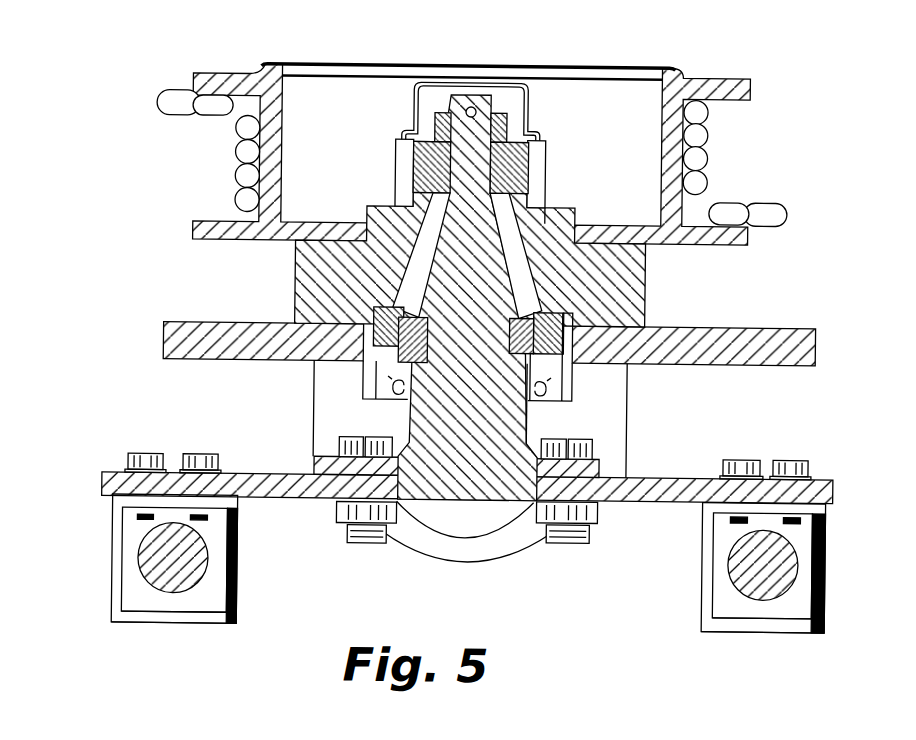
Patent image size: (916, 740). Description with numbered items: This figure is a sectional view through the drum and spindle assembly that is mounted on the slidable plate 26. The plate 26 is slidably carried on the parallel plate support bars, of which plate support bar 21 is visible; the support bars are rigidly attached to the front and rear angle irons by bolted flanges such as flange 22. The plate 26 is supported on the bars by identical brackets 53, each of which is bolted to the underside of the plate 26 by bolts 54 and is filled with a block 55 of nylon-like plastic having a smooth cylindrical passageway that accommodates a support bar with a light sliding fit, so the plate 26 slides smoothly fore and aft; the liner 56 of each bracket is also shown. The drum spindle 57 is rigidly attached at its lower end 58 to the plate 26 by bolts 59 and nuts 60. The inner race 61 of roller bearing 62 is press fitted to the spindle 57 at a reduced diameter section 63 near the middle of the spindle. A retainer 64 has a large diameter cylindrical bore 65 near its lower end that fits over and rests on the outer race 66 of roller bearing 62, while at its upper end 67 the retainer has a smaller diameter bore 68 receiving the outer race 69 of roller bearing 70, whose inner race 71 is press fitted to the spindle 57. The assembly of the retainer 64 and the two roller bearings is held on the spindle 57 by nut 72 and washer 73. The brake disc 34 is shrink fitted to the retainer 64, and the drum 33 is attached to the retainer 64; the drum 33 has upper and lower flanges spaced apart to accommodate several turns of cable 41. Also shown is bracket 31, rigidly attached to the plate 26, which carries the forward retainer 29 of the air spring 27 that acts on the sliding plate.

The plate support bar 21 is at (142, 564).
The bolted flange 22 is at (789, 558).
The plate 26 is at (696, 477).
The air spring 27 is at (456, 546).
The forward retainer 29 is at (484, 512).
The bracket 31 is at (603, 404).
The drum 33 is at (718, 80).
The brake disc 34 is at (797, 300).
The cable 41 is at (700, 151).
The bracket 53 is at (159, 626).
The bolt 54 is at (206, 457).
The block 55 is at (195, 602).
The bracket liner 56 is at (231, 568).
The drum spindle 57 is at (521, 422).
The lower end 58 is at (339, 465).
The bolt 59 is at (373, 438).
The nut 60 is at (345, 522).
The inner race 61 is at (424, 288).
The roller bearing 62 is at (396, 351).
The reduced diameter section 63 is at (493, 338).
The retainer 64 is at (636, 263).
The large diameter cylindrical bore 65 is at (573, 364).
The outer race 66 is at (573, 312).
The upper end 67 is at (537, 146).
The smaller diameter bore 68 is at (529, 171).
The outer race 69 is at (414, 169).
The roller bearing 70 is at (410, 128).
The inner race 71 is at (501, 141).
The nut 72 is at (494, 118).
The washer 73 is at (420, 107).